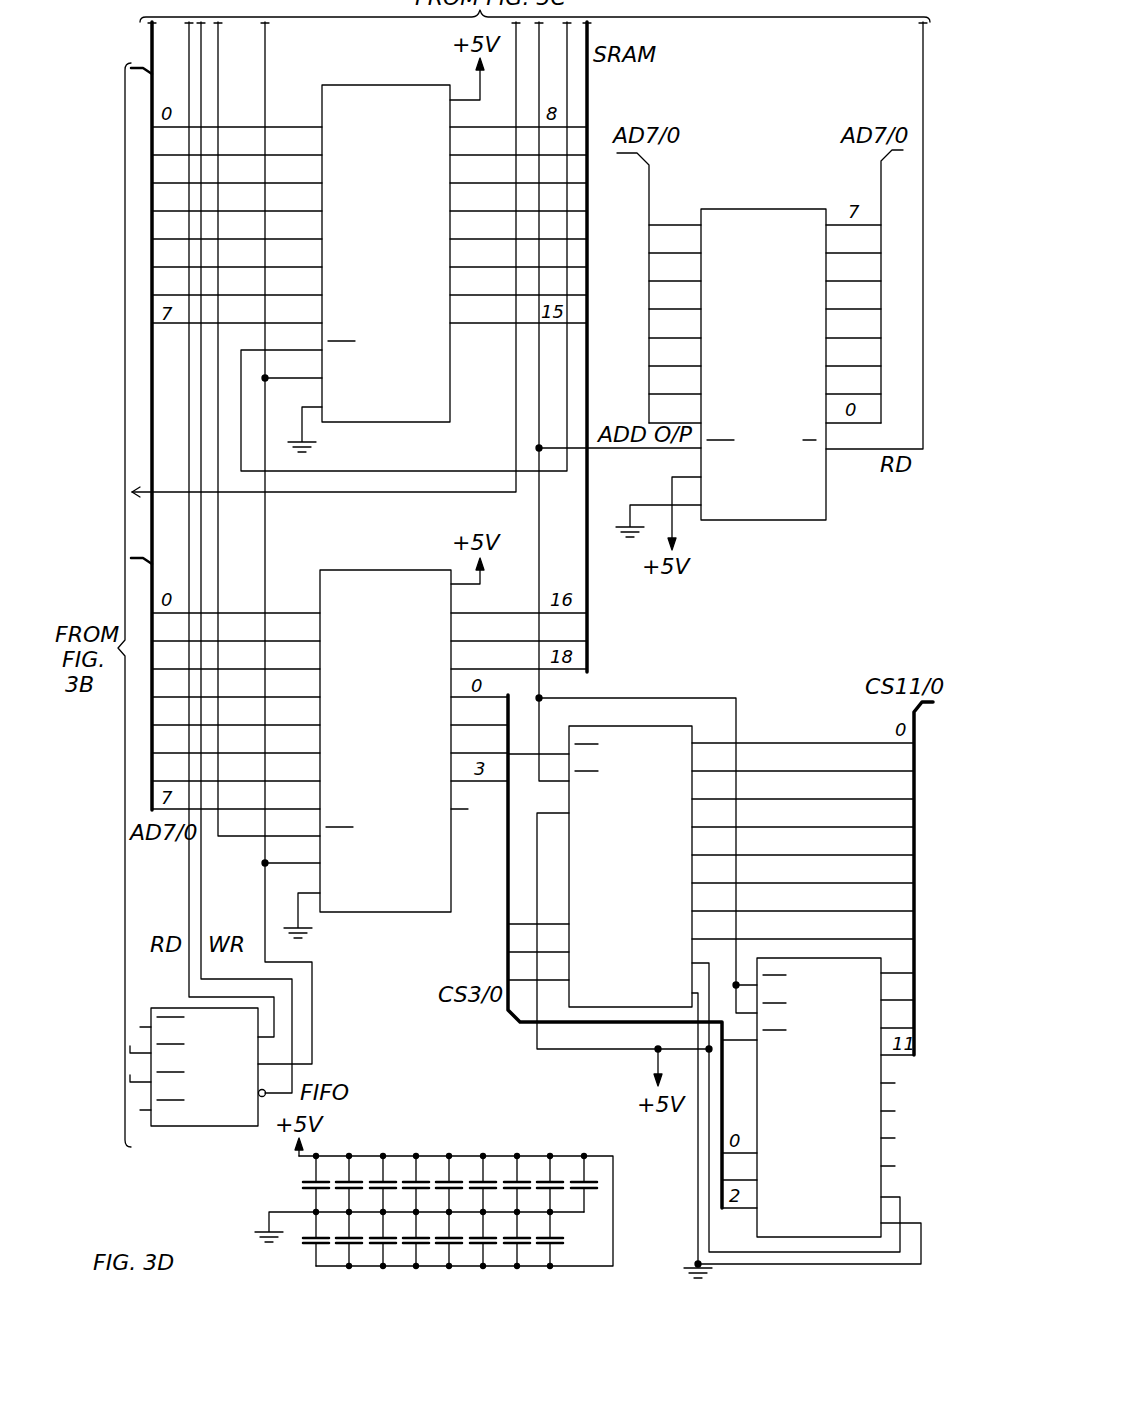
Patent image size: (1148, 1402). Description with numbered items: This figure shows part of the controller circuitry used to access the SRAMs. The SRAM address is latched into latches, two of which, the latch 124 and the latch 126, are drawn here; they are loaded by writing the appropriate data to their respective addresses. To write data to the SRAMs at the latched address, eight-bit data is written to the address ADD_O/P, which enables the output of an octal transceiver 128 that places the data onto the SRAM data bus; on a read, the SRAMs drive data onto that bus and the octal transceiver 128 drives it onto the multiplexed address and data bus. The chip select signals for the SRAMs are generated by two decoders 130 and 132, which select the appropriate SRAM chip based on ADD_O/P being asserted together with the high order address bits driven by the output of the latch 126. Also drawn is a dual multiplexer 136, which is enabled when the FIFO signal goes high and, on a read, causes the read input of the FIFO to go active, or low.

The latch 124 is at (384, 85).
The latch 126 is at (374, 570).
The octal transceiver 128 is at (766, 209).
The decoder 130 is at (612, 726).
The decoder 132 is at (884, 1128).
The dual multiplexer 136 is at (208, 1126).